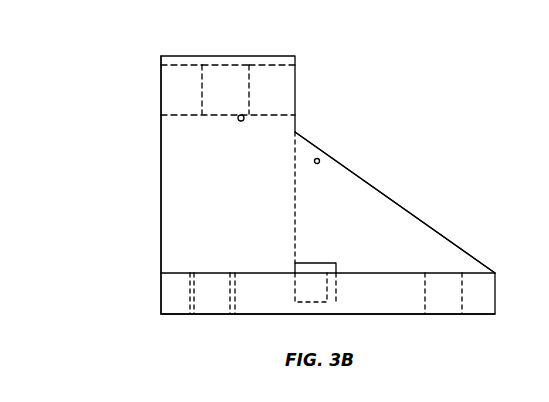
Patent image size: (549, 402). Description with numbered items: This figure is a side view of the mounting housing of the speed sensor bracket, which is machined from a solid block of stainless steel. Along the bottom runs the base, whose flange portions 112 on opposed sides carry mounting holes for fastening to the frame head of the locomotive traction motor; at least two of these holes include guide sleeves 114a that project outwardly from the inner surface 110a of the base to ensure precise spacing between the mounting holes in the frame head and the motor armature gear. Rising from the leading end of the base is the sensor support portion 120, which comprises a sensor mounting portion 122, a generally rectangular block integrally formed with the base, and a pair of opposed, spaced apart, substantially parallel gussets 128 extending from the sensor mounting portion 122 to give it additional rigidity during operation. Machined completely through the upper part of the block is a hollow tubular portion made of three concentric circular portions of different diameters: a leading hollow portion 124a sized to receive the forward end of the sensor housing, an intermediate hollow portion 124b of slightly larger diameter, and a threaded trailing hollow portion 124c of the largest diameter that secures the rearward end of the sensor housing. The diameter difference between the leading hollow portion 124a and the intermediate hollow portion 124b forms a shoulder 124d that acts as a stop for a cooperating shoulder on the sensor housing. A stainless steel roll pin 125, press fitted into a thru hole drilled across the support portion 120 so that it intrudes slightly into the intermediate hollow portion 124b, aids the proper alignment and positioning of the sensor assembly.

The inner surface of the base 110a is at (402, 272).
The flange portions 112 is at (388, 303).
The guide sleeve 114a is at (345, 228).
The sensor support portion 120 is at (198, 192).
The sensor mounting portion 122 is at (178, 254).
The leading hollow portion 124a is at (175, 85).
The intermediate hollow portion 124b is at (218, 77).
The trailing hollow portion 124c is at (277, 77).
The shoulder 124d is at (202, 101).
The roll pin 125 is at (238, 121).
The gusset 128 is at (330, 179).